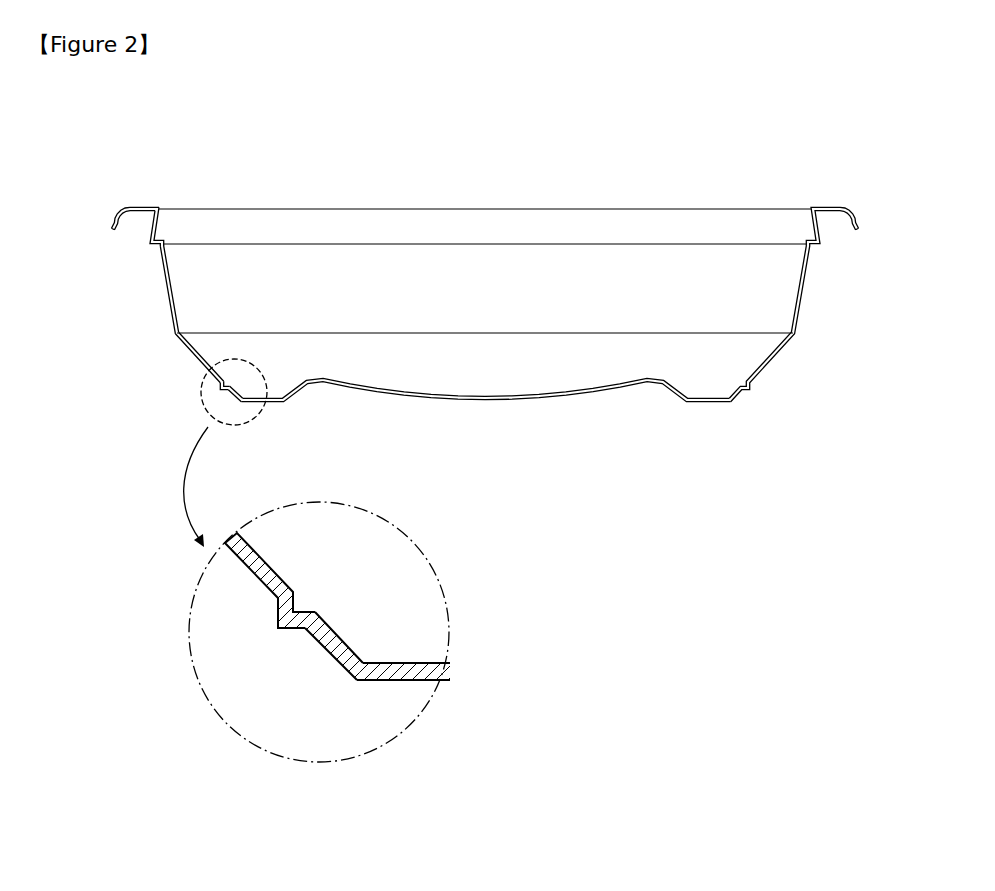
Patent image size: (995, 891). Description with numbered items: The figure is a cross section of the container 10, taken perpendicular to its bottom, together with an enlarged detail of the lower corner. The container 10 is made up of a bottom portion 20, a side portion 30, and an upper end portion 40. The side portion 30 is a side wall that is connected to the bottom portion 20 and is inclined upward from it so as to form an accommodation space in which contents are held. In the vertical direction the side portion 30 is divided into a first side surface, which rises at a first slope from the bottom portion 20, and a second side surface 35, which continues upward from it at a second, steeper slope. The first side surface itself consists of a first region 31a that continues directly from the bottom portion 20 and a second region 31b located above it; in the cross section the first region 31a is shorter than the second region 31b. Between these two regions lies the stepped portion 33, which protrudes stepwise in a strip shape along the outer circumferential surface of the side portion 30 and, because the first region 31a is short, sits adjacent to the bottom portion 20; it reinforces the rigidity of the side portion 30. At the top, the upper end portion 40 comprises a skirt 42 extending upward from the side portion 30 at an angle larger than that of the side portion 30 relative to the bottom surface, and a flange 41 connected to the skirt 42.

The container 10 is at (193, 111).
The bottom portion 20 is at (272, 404).
The side portion 30 is at (337, 495).
The first region 31a is at (222, 401).
The second region 31b is at (210, 377).
The stepped portion 33 is at (210, 386).
The second side surface 35 is at (167, 307).
The upper end portion 40 is at (125, 187).
The flange 41 is at (128, 208).
The skirt 42 is at (155, 232).